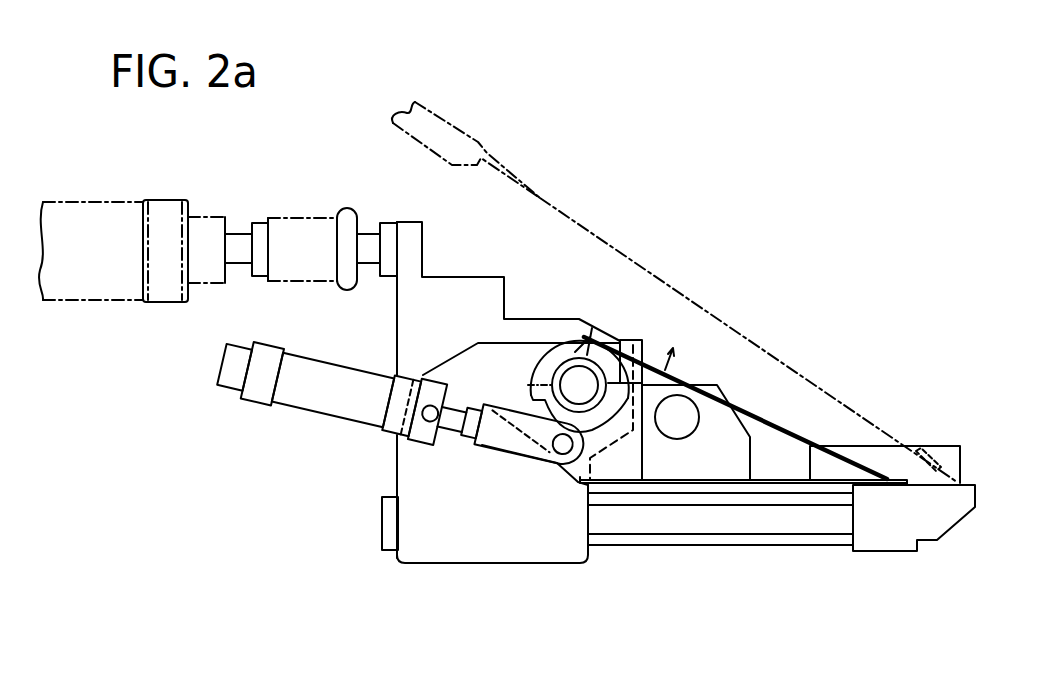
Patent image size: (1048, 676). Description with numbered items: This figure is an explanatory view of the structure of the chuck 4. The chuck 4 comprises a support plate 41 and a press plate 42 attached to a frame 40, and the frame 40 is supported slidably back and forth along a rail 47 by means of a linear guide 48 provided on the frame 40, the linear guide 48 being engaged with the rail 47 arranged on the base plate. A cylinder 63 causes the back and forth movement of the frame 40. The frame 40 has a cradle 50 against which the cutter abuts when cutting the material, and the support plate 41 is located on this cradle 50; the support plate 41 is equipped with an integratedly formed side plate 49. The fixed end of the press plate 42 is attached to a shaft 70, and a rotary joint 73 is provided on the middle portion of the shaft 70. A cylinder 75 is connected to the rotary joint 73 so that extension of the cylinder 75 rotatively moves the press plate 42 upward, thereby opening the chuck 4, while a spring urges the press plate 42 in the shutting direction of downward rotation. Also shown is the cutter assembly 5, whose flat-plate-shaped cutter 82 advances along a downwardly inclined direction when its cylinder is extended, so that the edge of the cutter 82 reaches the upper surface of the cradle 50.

The chuck 4 is at (755, 569).
The cutter assembly 5 is at (483, 133).
The frame 40 is at (475, 283).
The support plate 41 is at (787, 477).
The press plate 42 is at (772, 427).
The rail 47 is at (637, 525).
The linear guide 48 is at (510, 553).
The side plate 49 is at (710, 412).
The cradle 50 is at (827, 543).
The cylinder 63 is at (120, 200).
The shaft 70 is at (580, 366).
The rotary joint 73 is at (535, 357).
The cylinder 75 is at (332, 408).
The cutter 82 is at (947, 470).